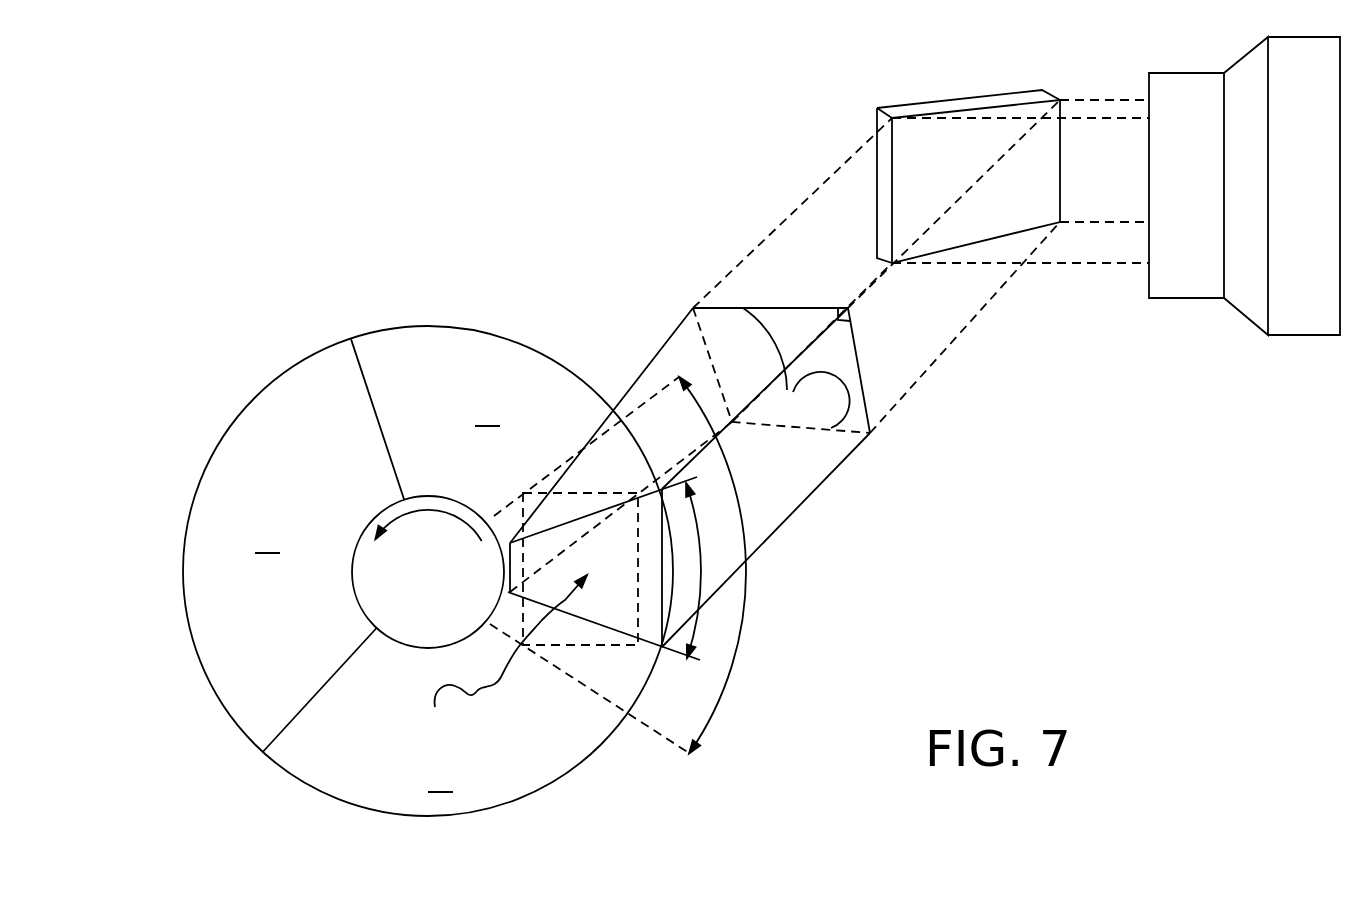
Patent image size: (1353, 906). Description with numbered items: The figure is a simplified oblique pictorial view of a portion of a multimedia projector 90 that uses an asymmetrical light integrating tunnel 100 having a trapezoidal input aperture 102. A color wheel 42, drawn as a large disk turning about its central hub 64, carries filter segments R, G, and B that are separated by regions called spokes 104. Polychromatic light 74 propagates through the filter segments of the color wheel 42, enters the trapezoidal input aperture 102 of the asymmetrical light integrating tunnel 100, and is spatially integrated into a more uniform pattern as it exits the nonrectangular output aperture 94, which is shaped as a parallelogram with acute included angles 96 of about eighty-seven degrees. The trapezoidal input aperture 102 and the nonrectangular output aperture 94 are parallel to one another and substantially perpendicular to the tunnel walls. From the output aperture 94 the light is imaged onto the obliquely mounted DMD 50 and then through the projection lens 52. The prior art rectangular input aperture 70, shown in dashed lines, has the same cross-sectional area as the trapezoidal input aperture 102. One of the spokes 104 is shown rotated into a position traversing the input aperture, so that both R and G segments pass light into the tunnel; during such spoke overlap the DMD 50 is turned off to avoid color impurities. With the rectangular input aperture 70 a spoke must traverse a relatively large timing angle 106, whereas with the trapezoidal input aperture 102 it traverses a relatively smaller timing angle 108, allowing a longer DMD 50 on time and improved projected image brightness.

The color wheel 42 is at (426, 300).
The DMD 50 is at (945, 138).
The projection lens 52 is at (1297, 315).
The hub of color wheel 64 is at (447, 588).
The rectangular input aperture 70 is at (606, 493).
The polychromatic light 74 is at (498, 661).
The multimedia projector 90 is at (1112, 522).
The nonrectangular output aperture 94 is at (787, 322).
The acute included angles 96 is at (796, 368).
The asymmetrical light integrating tunnel 100 is at (783, 479).
The trapezoidal input aperture 102 is at (587, 563).
The spokes 104 is at (380, 441).
The timing angle 106 is at (715, 703).
The timing angle 108 is at (700, 632).